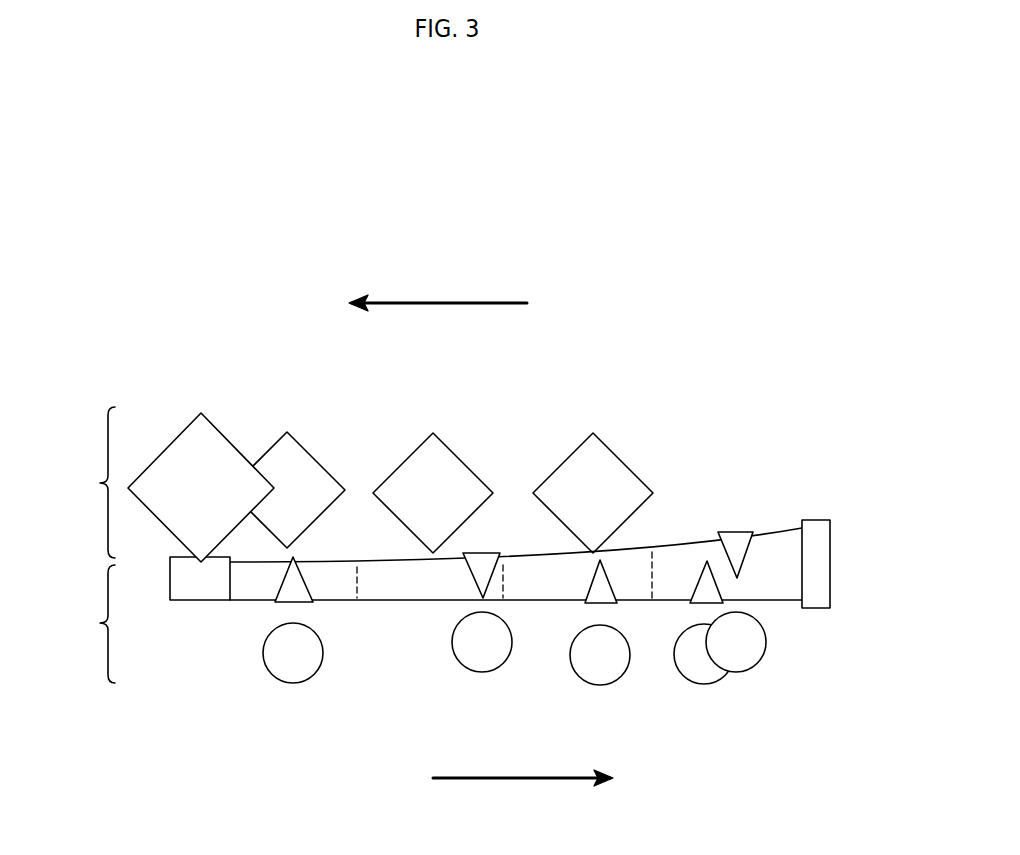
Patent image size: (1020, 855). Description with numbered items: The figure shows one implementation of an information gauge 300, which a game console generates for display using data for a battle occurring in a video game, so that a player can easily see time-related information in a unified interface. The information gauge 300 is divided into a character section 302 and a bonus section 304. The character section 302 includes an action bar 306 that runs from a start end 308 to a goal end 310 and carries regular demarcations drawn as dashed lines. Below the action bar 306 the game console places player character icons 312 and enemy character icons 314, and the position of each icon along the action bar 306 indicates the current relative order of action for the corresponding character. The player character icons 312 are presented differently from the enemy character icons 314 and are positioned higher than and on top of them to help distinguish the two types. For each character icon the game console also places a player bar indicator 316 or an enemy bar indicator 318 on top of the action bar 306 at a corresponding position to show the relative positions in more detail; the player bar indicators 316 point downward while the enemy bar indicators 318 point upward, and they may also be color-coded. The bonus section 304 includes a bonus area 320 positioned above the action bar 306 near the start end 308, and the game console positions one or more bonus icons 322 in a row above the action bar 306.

The information gauge 300 is at (653, 342).
The character section 302 is at (66, 624).
The bonus section 304 is at (66, 482).
The action bar 306 is at (783, 603).
The start end 308 is at (203, 602).
The goal end 310 is at (812, 520).
The player character icons 312 is at (460, 668).
The enemy character icons 314 is at (273, 675).
The player bar indicator 316 is at (488, 553).
The enemy bar indicator 318 is at (308, 603).
The bonus area 320 is at (222, 430).
The bonus icons 322 is at (307, 445).